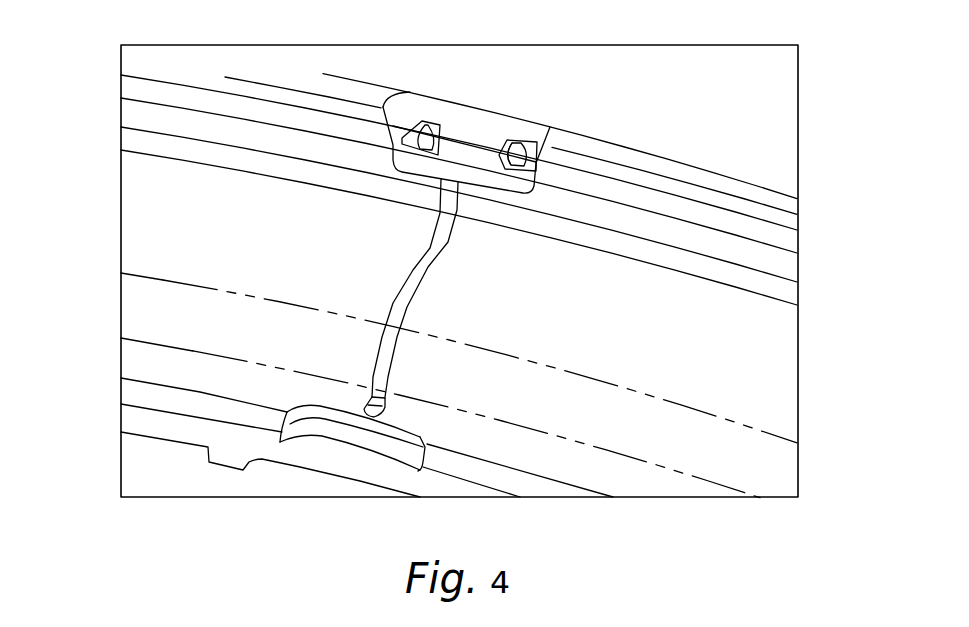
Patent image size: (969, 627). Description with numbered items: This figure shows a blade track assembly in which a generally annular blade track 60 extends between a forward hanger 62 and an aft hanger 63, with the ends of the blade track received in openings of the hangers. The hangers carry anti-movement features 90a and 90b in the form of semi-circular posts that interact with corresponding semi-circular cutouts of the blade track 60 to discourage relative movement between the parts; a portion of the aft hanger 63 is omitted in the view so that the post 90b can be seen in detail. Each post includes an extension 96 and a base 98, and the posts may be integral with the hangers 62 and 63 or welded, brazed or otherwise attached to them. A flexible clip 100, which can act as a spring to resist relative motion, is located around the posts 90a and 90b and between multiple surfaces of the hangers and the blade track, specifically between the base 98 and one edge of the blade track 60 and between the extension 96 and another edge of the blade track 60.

The blade track 60 is at (780, 267).
The forward hanger 62 is at (121, 415).
The aft hanger 63 is at (667, 158).
The anti-movement feature 90a is at (313, 432).
The anti-movement feature 90b is at (480, 152).
The extension 96 is at (438, 148).
The base 98 is at (560, 153).
The clip 100 is at (534, 146).